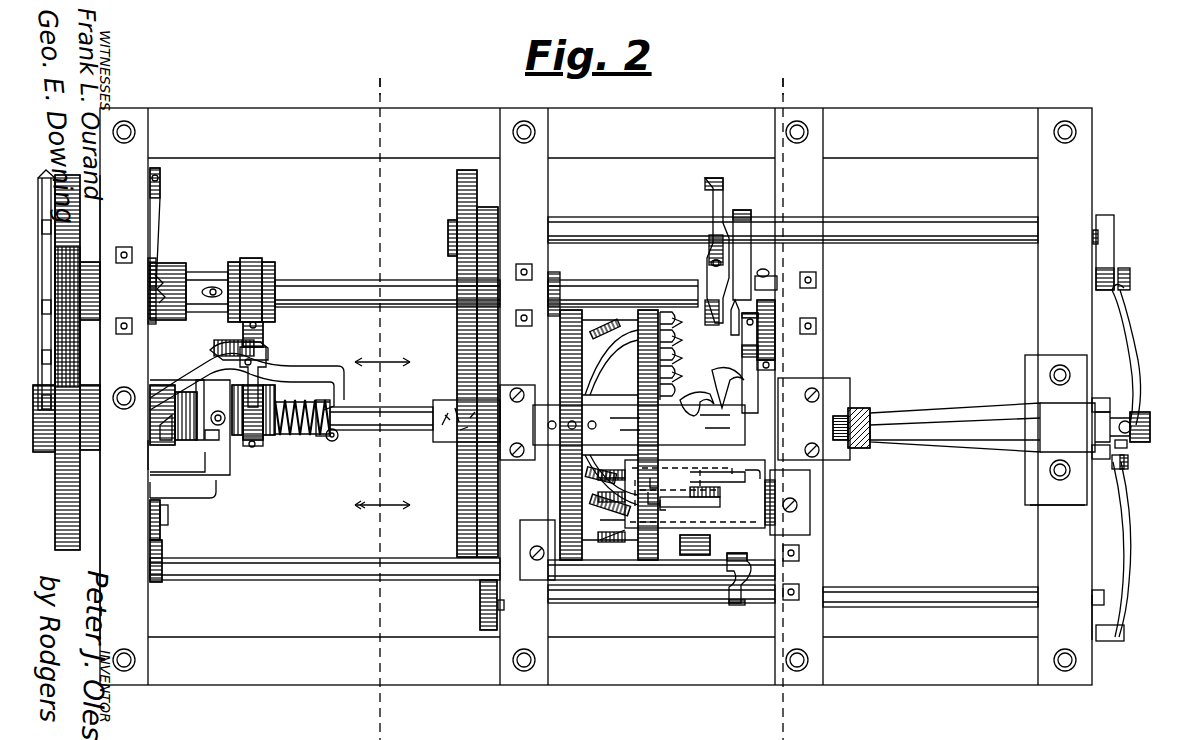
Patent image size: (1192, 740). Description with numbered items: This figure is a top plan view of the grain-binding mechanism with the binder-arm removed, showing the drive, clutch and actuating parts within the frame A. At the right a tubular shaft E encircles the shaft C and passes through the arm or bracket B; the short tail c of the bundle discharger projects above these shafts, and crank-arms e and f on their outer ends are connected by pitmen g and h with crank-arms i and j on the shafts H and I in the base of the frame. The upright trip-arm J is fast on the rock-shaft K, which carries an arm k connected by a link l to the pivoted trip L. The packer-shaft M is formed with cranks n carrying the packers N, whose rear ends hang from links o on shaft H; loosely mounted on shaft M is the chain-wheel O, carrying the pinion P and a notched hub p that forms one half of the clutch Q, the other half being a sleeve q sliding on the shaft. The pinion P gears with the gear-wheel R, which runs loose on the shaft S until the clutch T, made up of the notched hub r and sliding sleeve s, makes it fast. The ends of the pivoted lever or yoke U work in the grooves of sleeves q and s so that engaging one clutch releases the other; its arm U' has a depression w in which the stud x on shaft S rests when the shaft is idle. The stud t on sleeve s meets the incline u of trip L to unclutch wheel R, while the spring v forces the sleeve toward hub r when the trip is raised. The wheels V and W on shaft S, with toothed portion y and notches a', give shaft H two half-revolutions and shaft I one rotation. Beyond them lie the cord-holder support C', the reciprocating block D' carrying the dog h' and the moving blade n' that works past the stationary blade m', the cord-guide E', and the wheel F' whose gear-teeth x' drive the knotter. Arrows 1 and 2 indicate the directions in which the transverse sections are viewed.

The frame A is at (596, 396).
The arm or bracket B is at (1010, 415).
The shaft C is at (840, 443).
The tubular shaft E is at (863, 409).
The shaft H is at (793, 219).
The shaft I is at (930, 585).
The trip-arm J is at (739, 591).
The rock-shaft K is at (462, 569).
The packer-shaft M is at (486, 286).
The packers N is at (697, 251).
The lever block N' is at (742, 327).
The chain-wheel O is at (57, 407).
The pinion P is at (66, 342).
The clutch Q is at (168, 279).
The gear-wheel R is at (55, 360).
The shaft S is at (442, 480).
The clutch T is at (190, 427).
The lever or yoke U is at (266, 384).
The arm U' is at (247, 375).
The wheel V is at (456, 363).
The wheel W is at (490, 418).
The block or support C' is at (765, 466).
The reciprocating block D' is at (681, 501).
The cord-guide E' is at (639, 435).
The wheel F' is at (679, 356).
The notch or cavity a' is at (712, 390).
The spring hook or dog h' is at (660, 494).
The stationary blade m' is at (747, 464).
The moving blade n' is at (717, 466).
The gear-teeth x' is at (687, 350).
The short tail or arm c is at (1122, 436).
The crank-arm e is at (1148, 422).
The crank-arm f is at (1067, 430).
The pitman g is at (1134, 346).
The pitman h is at (1130, 546).
The crank-arm i is at (1114, 245).
The crank-arm j is at (1105, 640).
The arm k is at (156, 542).
The link l is at (162, 518).
The trip L is at (186, 475).
The cranks n is at (756, 311).
The links o is at (722, 220).
The hub p is at (162, 275).
The sleeve q is at (200, 280).
The notched hub r is at (146, 452).
The sliding sleeve s is at (218, 405).
The stud t is at (218, 440).
The incline u is at (206, 432).
The spring v is at (300, 440).
The depression w is at (318, 440).
The toothed portion y is at (777, 399).
The arrow 1 is at (382, 354).
The arrow 2 is at (382, 496).